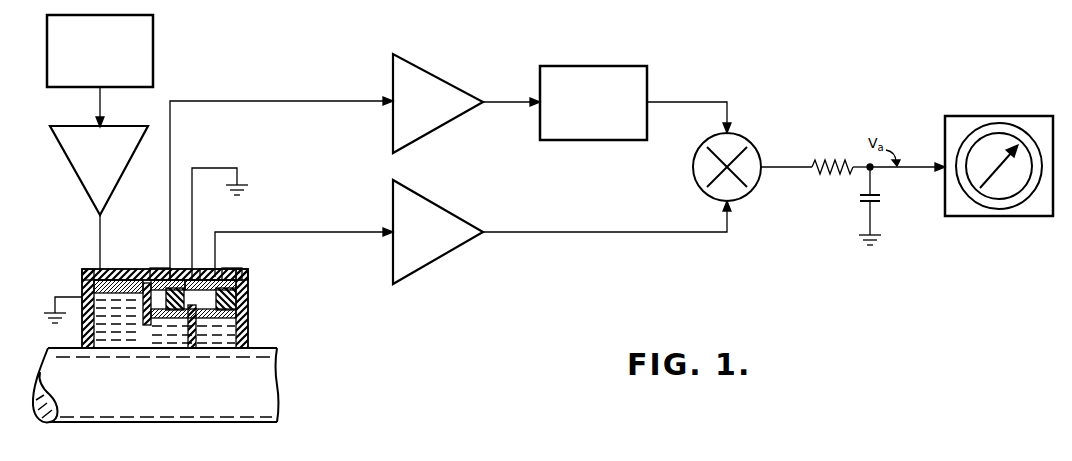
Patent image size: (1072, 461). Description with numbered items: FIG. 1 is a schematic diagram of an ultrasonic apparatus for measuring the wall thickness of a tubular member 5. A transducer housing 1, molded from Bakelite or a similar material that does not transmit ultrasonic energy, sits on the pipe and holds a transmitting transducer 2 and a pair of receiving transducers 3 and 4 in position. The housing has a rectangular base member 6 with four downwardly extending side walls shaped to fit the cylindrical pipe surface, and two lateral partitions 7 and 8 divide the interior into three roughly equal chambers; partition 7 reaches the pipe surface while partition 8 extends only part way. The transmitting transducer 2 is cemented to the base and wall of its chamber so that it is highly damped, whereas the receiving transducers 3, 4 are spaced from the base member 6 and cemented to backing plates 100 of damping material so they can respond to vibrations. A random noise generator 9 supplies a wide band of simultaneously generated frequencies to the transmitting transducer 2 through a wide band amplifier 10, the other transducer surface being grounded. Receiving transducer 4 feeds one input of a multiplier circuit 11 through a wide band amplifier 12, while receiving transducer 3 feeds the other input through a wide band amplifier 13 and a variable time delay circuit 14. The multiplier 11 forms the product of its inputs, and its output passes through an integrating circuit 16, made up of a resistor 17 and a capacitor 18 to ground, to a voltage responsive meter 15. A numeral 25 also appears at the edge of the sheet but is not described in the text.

The transducer housing 1 is at (248, 283).
The transmitting transducer 2 is at (115, 270).
The receiving transducer 3 is at (164, 302).
The receiving transducer 4 is at (210, 314).
The tubular member 5 is at (270, 392).
The base member 6 is at (229, 270).
The partition 7 is at (200, 334).
The partition 8 is at (140, 313).
The random noise generator 9 is at (153, 52).
The wide band amplifier 10 is at (79, 124).
The multiplier circuit 11 is at (751, 147).
The wide band amplifier 12 is at (438, 256).
The wide band amplifier 13 is at (428, 72).
The variable time delay circuit 14 is at (612, 66).
The voltage responsive meter 15 is at (993, 216).
The integrating circuit 16 is at (840, 192).
The resistor 17 is at (820, 161).
The capacitor 18 is at (879, 204).
The reference numeral (cut off) 25 is at (296, 457).
The backing plates 100 is at (160, 270).